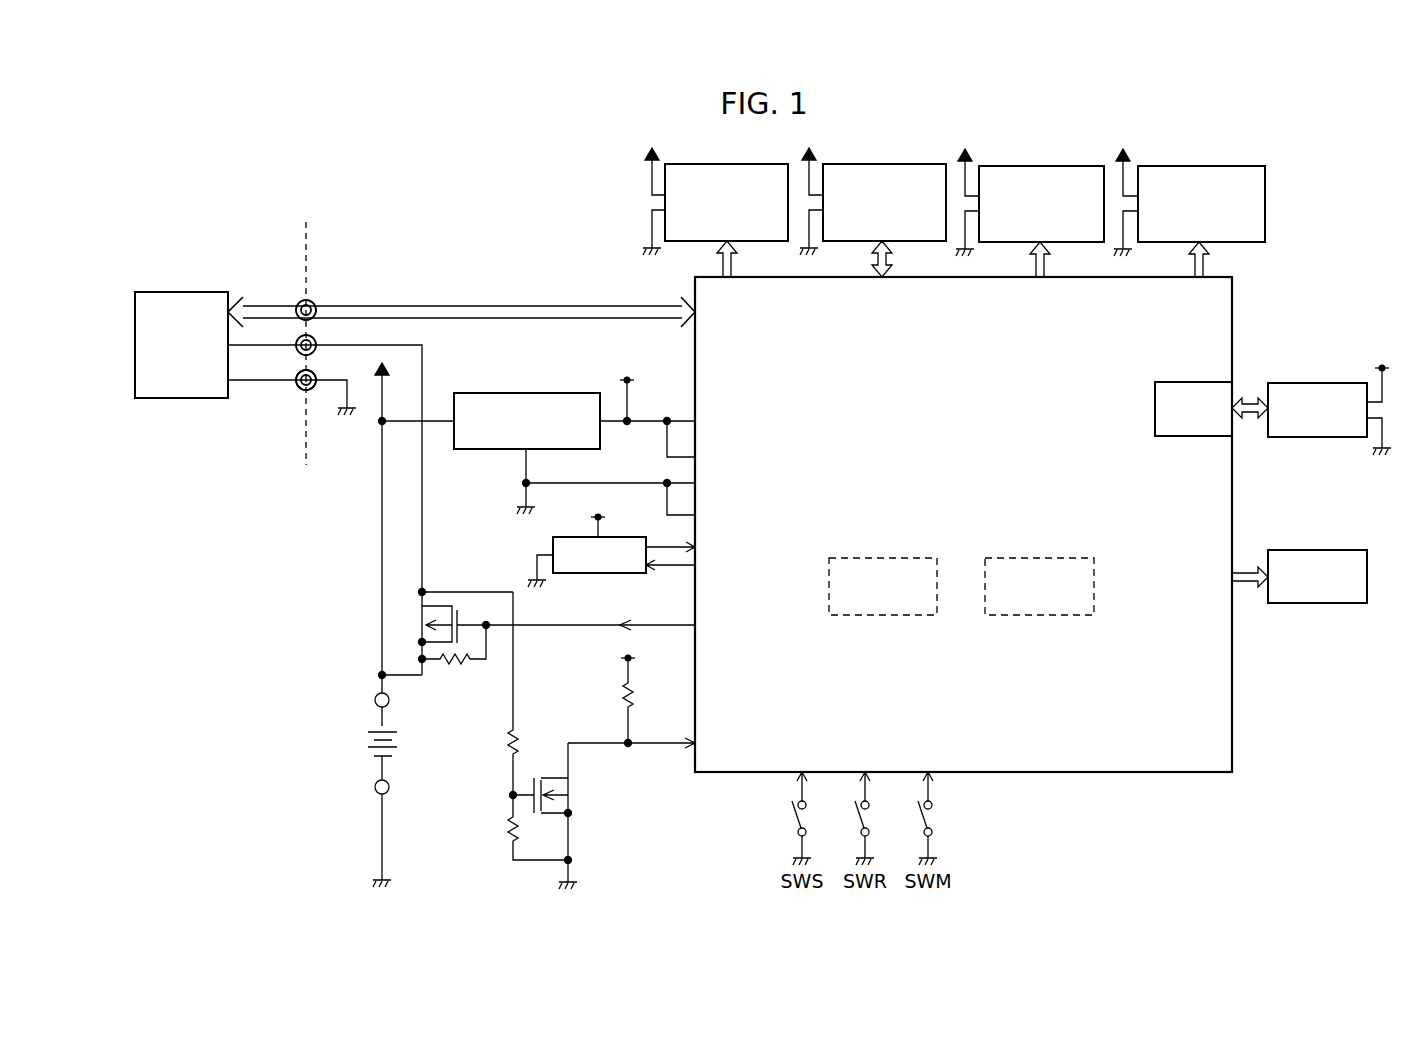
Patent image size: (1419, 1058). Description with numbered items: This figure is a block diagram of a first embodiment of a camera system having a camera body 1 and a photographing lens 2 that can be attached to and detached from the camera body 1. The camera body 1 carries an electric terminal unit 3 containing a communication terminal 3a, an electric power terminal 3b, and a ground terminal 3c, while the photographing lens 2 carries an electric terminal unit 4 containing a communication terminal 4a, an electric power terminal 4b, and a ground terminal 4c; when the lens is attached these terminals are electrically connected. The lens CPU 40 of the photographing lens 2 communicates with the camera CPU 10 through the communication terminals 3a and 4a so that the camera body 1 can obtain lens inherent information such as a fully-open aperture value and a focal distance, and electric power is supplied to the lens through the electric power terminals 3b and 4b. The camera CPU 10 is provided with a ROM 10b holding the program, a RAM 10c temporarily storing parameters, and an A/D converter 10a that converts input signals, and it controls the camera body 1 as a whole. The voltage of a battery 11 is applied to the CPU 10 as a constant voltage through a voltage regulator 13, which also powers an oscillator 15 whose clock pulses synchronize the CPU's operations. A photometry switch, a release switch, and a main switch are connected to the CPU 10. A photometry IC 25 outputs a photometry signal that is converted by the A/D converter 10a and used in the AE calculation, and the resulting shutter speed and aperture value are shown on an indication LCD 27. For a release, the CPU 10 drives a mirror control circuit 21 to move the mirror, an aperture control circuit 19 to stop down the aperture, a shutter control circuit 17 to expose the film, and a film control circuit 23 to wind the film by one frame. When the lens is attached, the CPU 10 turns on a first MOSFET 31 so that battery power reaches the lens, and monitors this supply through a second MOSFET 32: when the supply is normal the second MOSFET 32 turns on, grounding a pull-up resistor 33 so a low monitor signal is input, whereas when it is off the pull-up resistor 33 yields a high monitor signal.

The camera body 1 is at (360, 204).
The photographing lens 2 is at (244, 204).
The electric terminal unit 3 is at (320, 400).
The communication terminal 3a is at (319, 303).
The electric power terminal 3b is at (319, 338).
The ground terminal 3c is at (319, 373).
The electric terminal unit 4 is at (298, 401).
The communication terminal 4a is at (293, 303).
The electric power terminal 4b is at (293, 338).
The ground terminal 4c is at (293, 373).
The camera CPU 10 is at (1115, 772).
The A/D converter 10a is at (1194, 382).
The ROM 10b is at (888, 615).
The RAM 10c is at (1043, 615).
The battery 11 is at (366, 742).
The voltage regulator 13 is at (529, 393).
The oscillator 15 is at (602, 573).
The shutter control circuit 17 is at (729, 164).
The aperture control circuit 19 is at (886, 164).
The mirror control circuit 21 is at (1043, 164).
The film control circuit 23 is at (1203, 164).
The photometry IC 25 is at (1318, 382).
The indication LCD 27 is at (1318, 550).
The first MOSFET 31 is at (455, 665).
The second MOSFET 32 is at (572, 797).
The pull-up resistor 33 is at (623, 697).
The lens CPU 40 is at (186, 292).